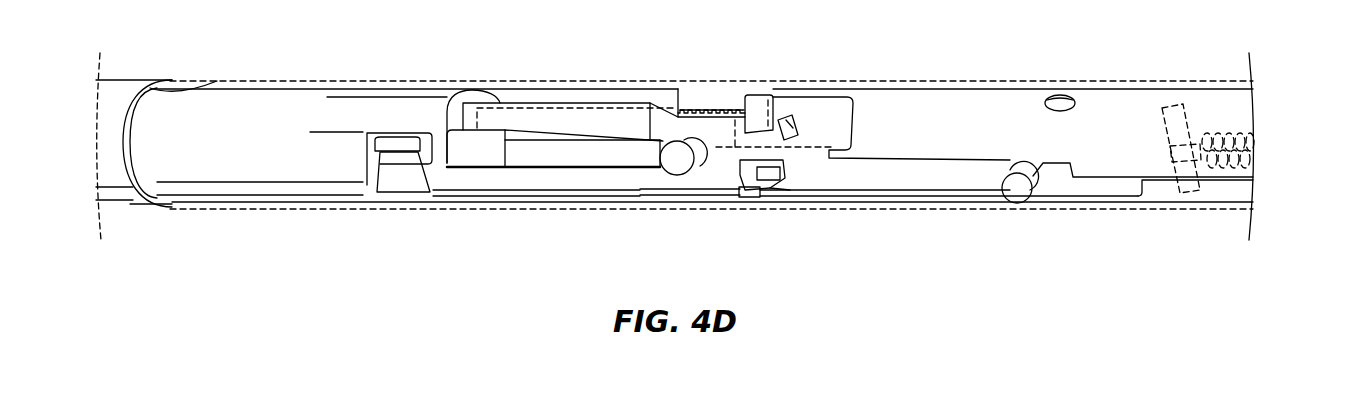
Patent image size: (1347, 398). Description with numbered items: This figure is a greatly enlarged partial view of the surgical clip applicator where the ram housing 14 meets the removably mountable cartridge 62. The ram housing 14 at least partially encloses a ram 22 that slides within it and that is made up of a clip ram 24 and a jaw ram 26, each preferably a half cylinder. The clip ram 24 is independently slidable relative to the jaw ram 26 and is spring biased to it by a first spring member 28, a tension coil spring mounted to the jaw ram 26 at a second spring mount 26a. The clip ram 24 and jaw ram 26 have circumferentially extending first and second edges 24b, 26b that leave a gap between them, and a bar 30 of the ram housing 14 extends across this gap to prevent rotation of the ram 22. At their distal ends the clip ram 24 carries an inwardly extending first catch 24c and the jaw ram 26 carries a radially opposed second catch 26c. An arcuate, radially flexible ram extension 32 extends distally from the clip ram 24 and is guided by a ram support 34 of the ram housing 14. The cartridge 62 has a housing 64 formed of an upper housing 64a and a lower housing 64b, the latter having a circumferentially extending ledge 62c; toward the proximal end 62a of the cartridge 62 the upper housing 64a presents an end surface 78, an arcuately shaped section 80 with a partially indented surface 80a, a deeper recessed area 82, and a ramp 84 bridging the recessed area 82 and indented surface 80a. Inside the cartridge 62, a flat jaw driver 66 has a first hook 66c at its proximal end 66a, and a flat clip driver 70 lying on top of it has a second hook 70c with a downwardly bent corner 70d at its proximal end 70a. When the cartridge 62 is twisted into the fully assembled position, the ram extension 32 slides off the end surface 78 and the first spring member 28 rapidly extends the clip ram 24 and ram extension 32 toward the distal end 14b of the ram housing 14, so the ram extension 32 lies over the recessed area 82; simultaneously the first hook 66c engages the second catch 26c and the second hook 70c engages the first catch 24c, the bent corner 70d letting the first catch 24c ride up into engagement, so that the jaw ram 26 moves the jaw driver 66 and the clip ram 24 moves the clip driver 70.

The ram housing 14 is at (952, 82).
The distal end of the ram housing 14b is at (270, 80).
The ram 22 is at (1110, 90).
The clip ram 24 is at (1027, 103).
The first edge 24b is at (1063, 173).
The first catch 24c is at (773, 115).
The jaw ram 26 is at (953, 200).
The second spring mount 26a is at (1194, 205).
The second edge 26b is at (1133, 192).
The second catch 26c is at (760, 183).
The first spring member 28 is at (1258, 137).
The bar 30 is at (1015, 190).
The ram extension 32 is at (633, 80).
The ram support 34 is at (663, 170).
The cartridge 62 is at (120, 207).
The proximal end of the cartridge 62a is at (535, 90).
The ledge 62c is at (207, 83).
The housing 64 is at (122, 80).
The upper housing 64a is at (107, 120).
The lower housing 64b is at (135, 212).
The jaw driver 66 is at (700, 183).
The proximal end of the jaw driver 66a is at (727, 178).
The first hook 66c is at (773, 180).
The clip driver 70 is at (698, 130).
The proximal end of the clip driver 70a is at (713, 130).
The second hook 70c is at (783, 127).
The bent corner 70d is at (793, 122).
The end surface 78 is at (670, 165).
The arcuately shaped section 80 is at (517, 178).
The indented surface 80a is at (550, 155).
The recessed area 82 is at (587, 120).
The ramp 84 is at (472, 153).